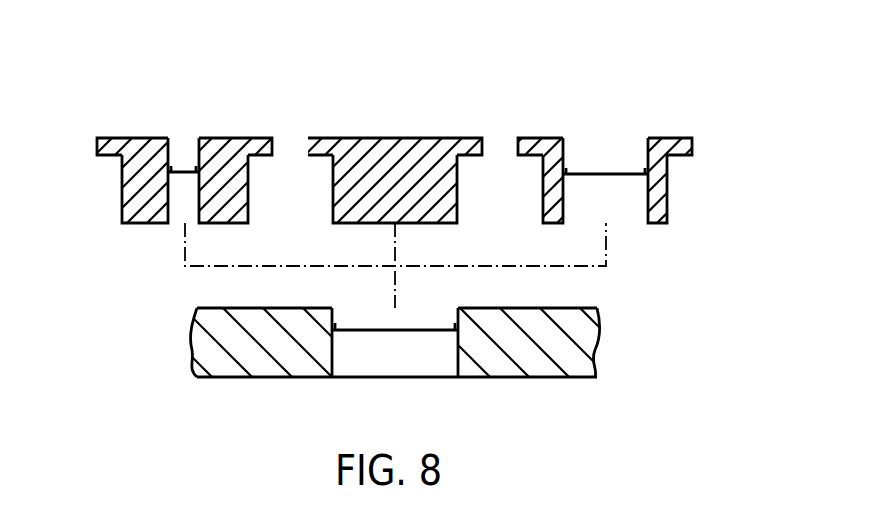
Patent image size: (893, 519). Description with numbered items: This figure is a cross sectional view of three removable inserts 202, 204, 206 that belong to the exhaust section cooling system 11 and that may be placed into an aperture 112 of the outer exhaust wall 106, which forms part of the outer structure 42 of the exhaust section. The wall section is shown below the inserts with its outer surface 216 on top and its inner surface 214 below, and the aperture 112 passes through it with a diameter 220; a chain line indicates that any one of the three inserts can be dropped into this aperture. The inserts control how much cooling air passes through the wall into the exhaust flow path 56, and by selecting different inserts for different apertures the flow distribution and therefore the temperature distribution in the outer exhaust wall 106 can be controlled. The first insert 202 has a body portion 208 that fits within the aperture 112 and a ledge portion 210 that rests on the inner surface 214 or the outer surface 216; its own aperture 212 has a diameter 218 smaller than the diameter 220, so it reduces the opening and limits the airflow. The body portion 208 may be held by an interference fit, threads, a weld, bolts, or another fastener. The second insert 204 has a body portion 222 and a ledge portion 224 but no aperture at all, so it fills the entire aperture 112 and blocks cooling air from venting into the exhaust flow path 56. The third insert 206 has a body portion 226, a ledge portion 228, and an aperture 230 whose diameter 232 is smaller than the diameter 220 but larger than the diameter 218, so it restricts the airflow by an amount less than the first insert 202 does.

The exhaust section cooling system 11 is at (170, 300).
The outer structure 42 is at (409, 356).
The exhaust flow path 56 is at (552, 445).
The outer exhaust wall 106 is at (228, 368).
The aperture 112 is at (441, 368).
The insert 202 is at (189, 155).
The insert 204 is at (399, 134).
The insert 206 is at (599, 154).
The body portion 208 is at (130, 185).
The ledge portion 210 is at (113, 137).
The aperture 212 is at (178, 215).
The inner surface 214 is at (580, 378).
The outer surface 216 is at (567, 309).
The diameter 218 is at (184, 172).
The diameter 220 is at (390, 338).
The body portion 222 is at (455, 212).
The ledge portion 224 is at (465, 137).
The body portion 226 is at (663, 190).
The ledge portion 228 is at (675, 137).
The aperture 230 is at (625, 215).
The diameter 232 is at (605, 174).